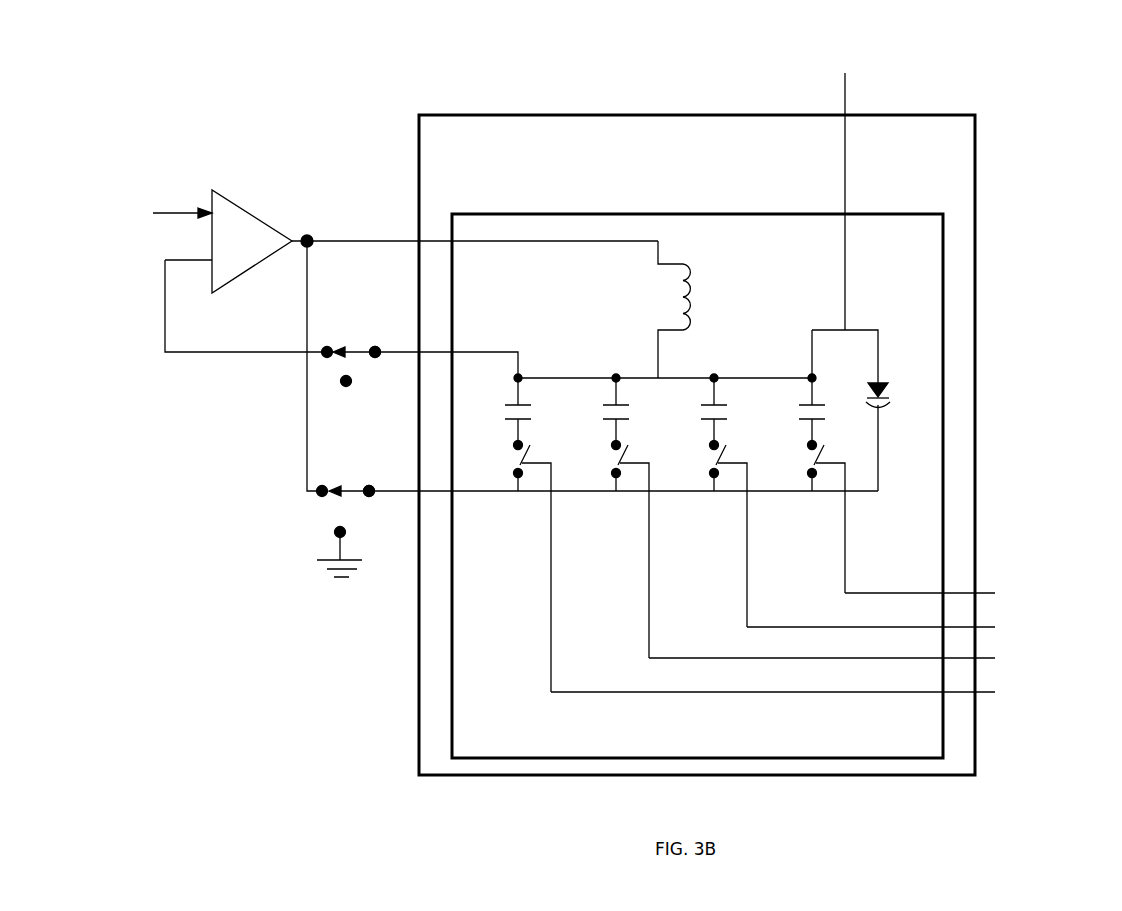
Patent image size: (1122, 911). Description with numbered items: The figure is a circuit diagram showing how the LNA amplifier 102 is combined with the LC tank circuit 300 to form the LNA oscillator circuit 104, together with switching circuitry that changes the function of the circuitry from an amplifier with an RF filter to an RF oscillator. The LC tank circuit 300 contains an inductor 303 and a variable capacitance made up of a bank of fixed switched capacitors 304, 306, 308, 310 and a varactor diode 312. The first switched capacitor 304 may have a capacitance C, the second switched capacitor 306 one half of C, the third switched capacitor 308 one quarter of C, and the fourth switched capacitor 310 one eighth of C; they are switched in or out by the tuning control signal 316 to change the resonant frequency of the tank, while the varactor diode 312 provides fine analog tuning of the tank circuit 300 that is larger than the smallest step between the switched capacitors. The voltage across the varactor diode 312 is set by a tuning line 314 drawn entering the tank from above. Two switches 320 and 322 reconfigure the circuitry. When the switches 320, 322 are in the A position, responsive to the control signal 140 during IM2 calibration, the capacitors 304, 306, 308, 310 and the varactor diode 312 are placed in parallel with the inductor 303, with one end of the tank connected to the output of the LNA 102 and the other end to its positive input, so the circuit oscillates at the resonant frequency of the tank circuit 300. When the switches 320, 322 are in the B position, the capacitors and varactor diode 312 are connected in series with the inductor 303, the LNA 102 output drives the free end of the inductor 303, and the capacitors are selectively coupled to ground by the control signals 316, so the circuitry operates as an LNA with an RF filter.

The LNA amplifier 102 is at (405, 337).
The LNA oscillator circuit 104 is at (663, 158).
The control signal 140 is at (348, 352).
The LC tank circuit 300 is at (539, 740).
The inductor 303 is at (695, 309).
The first switched capacitor 304 is at (509, 533).
The second switched capacitor 306 is at (606, 516).
The third switched capacitor 308 is at (704, 500).
The fourth switched capacitor 310 is at (796, 461).
The varactor diode 312 is at (872, 410).
The control voltage input 314 is at (854, 186).
The tuning control signal 316 is at (1033, 592).
The switch 320 is at (360, 494).
The switch 322 is at (357, 354).